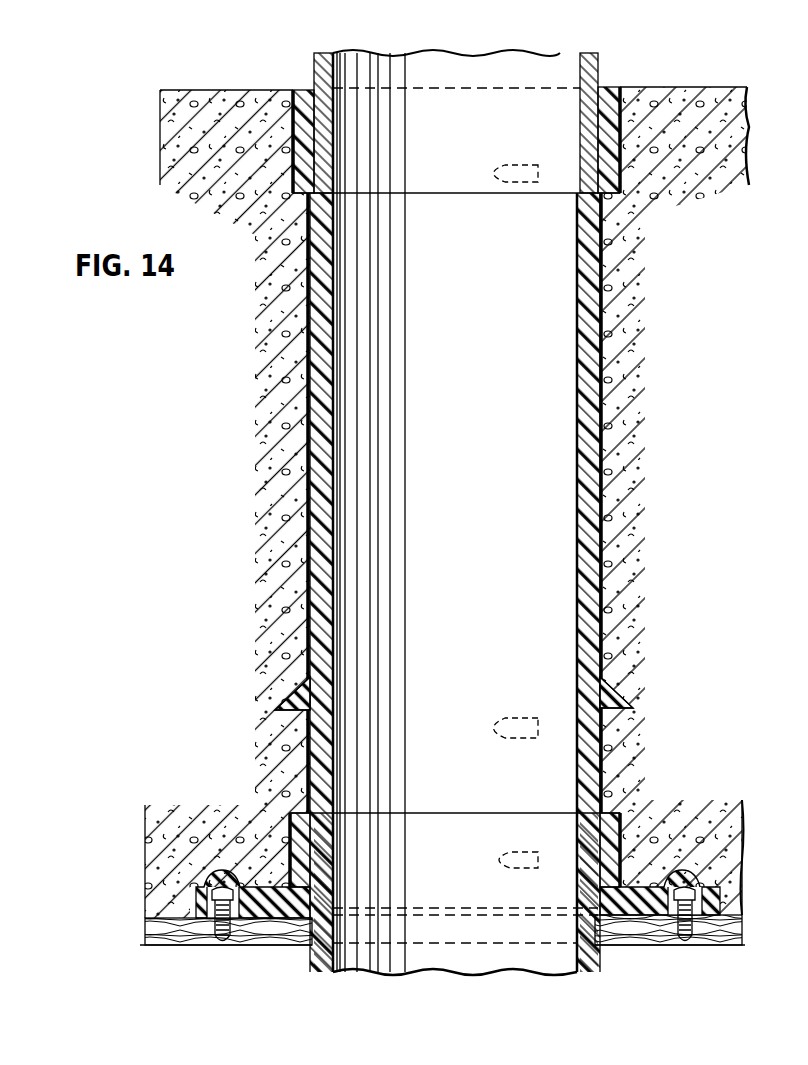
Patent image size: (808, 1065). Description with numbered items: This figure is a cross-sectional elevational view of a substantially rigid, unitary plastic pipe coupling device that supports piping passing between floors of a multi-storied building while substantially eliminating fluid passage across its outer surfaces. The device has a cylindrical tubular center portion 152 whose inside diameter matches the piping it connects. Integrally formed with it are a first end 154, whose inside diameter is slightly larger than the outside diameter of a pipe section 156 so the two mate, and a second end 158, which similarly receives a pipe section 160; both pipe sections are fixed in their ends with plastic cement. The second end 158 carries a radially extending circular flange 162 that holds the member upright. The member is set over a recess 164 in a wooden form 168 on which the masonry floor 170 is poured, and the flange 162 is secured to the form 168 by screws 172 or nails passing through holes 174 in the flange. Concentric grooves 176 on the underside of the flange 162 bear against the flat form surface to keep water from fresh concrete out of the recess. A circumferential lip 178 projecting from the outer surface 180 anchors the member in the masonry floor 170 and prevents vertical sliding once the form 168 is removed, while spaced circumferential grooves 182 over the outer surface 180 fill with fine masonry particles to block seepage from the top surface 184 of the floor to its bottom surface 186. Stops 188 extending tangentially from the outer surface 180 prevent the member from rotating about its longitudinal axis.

The tubular center portion 152 is at (598, 463).
The first end 154 is at (612, 138).
The pipe section 156 is at (580, 110).
The second end 158 is at (580, 842).
The pipe section 160 is at (580, 895).
The flange 162 is at (742, 850).
The recess 164 is at (312, 948).
The wooden form 168 is at (713, 927).
The masonry floor 170 is at (612, 578).
The screws 172 is at (700, 880).
The holes 174 is at (672, 918).
The concentric grooves 176 is at (637, 922).
The circumferential lip 178 is at (620, 690).
The outer surface 180 is at (605, 210).
The circumferentially extending grooves 182 is at (622, 165).
The top surface 184 is at (698, 87).
The bottom surface 186 is at (745, 885).
The stops 188 is at (505, 184).